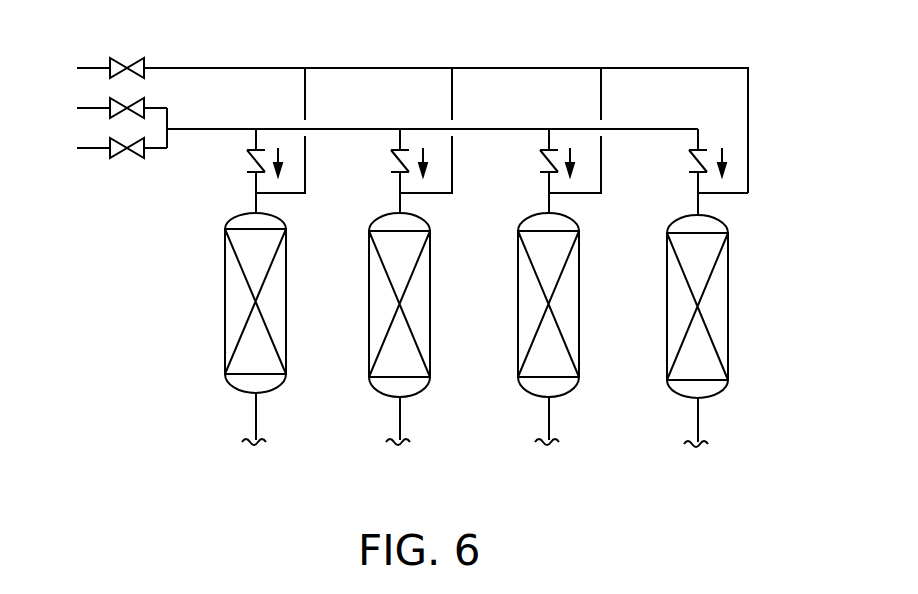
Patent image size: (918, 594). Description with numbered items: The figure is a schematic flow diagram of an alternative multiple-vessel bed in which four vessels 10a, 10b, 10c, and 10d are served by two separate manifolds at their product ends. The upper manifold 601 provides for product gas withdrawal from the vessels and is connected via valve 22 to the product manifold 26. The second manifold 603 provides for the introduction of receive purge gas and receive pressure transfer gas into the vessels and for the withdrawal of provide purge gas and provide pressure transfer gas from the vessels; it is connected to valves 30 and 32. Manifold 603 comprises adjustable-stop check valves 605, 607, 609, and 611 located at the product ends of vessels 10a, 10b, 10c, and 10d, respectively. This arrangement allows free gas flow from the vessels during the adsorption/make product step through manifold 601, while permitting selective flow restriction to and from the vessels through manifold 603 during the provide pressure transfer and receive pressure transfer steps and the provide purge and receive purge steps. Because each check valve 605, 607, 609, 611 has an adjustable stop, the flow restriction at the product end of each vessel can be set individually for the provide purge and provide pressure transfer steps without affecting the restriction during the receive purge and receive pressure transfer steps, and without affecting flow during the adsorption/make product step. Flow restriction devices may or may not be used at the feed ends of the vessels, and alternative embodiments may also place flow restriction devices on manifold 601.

The product manifold 26 is at (95, 67).
The valve 22 is at (135, 58).
The valve 30 is at (135, 99).
The valve 32 is at (122, 156).
The manifold 601 is at (421, 68).
The manifold 603 is at (577, 128).
The adjustable-stop check valve 605 is at (247, 158).
The adjustable-stop check valve 607 is at (392, 160).
The adjustable-stop check valve 609 is at (540, 162).
The adjustable-stop check valve 611 is at (690, 165).
The vessel 10a is at (286, 310).
The vessel 10b is at (431, 312).
The vessel 10c is at (580, 312).
The vessel 10d is at (729, 318).